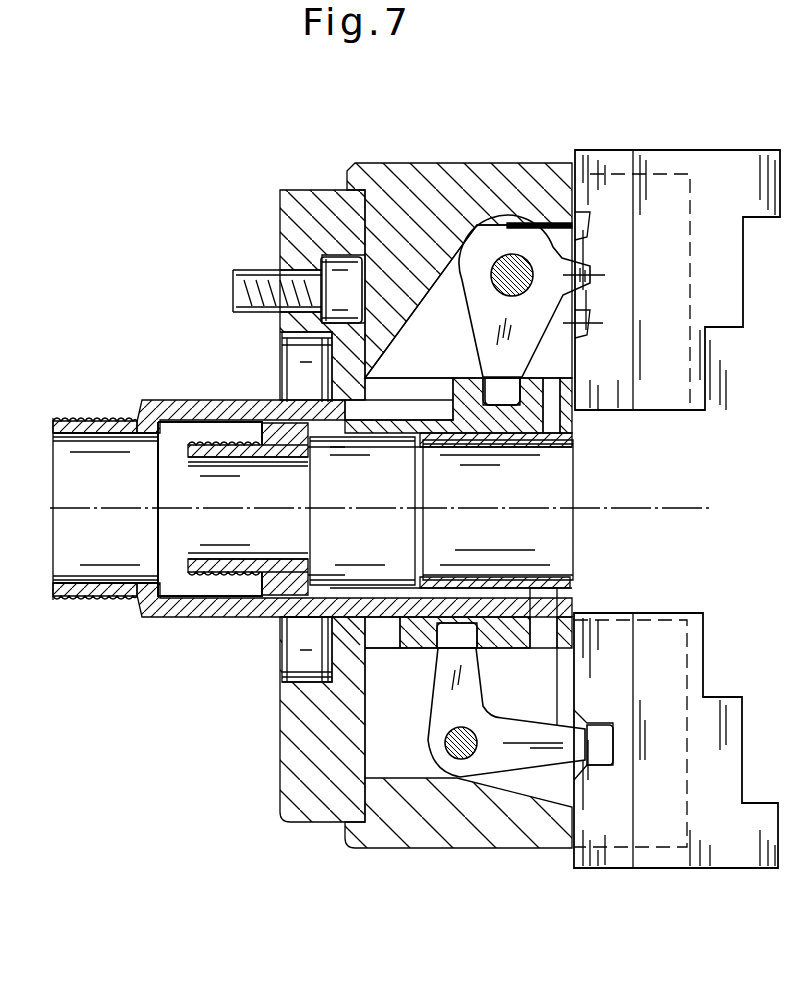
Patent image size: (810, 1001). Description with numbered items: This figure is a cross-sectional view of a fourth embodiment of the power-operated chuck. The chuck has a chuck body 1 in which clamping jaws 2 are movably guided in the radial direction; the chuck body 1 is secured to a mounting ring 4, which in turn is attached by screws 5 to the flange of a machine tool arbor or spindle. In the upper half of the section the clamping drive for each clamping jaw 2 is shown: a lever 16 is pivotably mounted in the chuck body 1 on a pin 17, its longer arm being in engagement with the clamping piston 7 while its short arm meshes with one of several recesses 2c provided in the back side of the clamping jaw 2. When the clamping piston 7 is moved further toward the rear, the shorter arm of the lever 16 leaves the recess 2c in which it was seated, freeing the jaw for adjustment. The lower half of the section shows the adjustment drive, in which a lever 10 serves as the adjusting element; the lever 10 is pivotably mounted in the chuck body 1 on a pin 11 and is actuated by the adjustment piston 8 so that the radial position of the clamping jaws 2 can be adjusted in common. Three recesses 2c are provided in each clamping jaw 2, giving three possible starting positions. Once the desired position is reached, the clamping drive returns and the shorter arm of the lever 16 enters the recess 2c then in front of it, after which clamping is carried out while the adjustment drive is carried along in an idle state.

The chuck body 1 is at (500, 178).
The clamping jaw 2 is at (719, 172).
The recess 2c is at (588, 332).
The mounting ring 4 is at (290, 763).
The screw 5 is at (244, 290).
The clamping piston 7 is at (527, 417).
The adjustment piston 8 is at (420, 648).
The lever 10 is at (505, 755).
The pin 11 is at (458, 753).
The lever 16 is at (485, 340).
The pin 17 is at (502, 281).